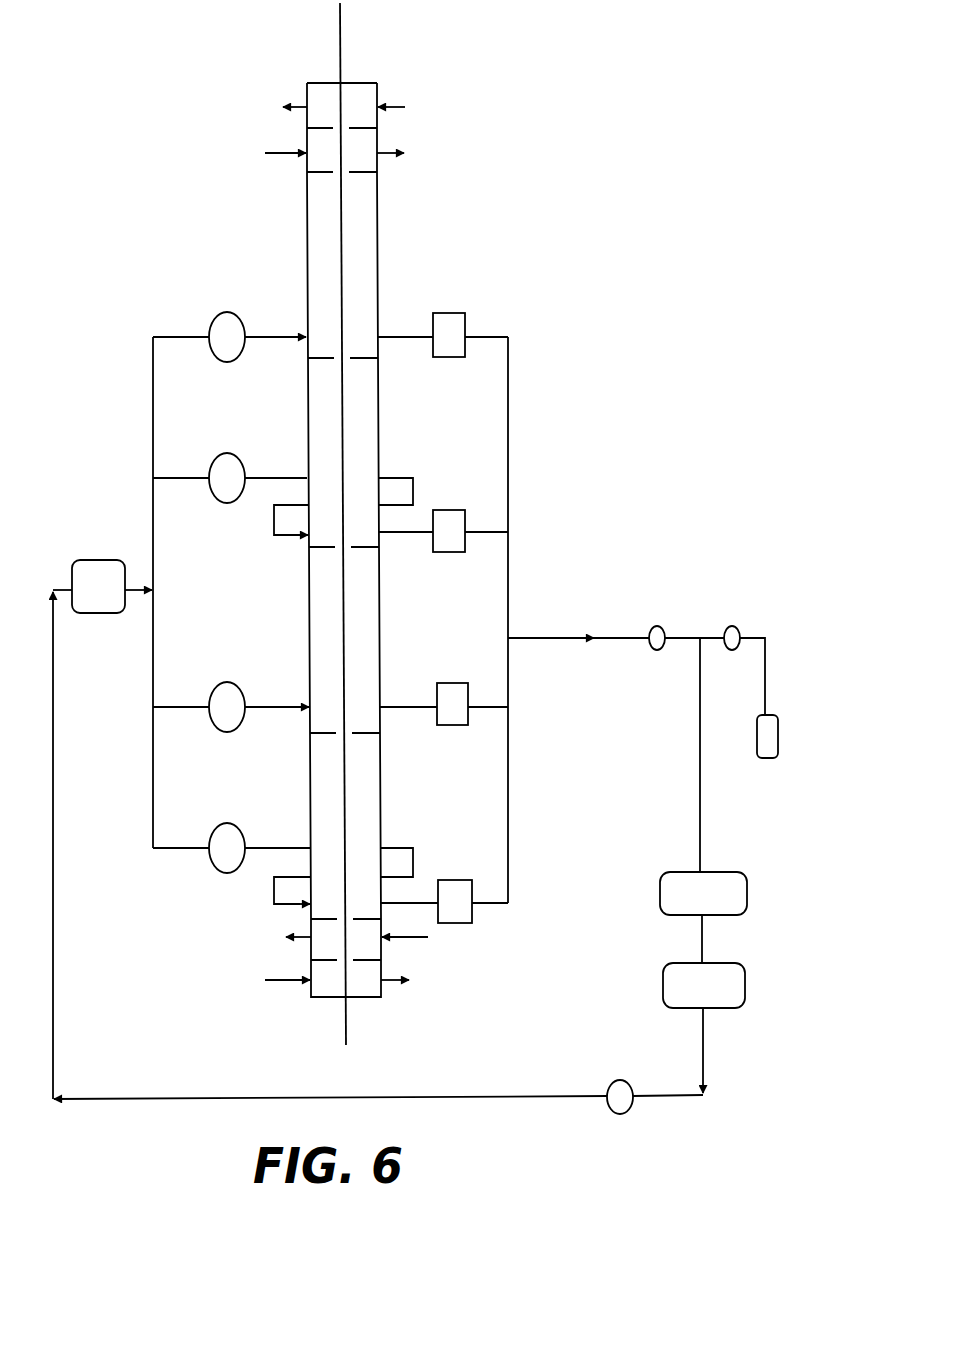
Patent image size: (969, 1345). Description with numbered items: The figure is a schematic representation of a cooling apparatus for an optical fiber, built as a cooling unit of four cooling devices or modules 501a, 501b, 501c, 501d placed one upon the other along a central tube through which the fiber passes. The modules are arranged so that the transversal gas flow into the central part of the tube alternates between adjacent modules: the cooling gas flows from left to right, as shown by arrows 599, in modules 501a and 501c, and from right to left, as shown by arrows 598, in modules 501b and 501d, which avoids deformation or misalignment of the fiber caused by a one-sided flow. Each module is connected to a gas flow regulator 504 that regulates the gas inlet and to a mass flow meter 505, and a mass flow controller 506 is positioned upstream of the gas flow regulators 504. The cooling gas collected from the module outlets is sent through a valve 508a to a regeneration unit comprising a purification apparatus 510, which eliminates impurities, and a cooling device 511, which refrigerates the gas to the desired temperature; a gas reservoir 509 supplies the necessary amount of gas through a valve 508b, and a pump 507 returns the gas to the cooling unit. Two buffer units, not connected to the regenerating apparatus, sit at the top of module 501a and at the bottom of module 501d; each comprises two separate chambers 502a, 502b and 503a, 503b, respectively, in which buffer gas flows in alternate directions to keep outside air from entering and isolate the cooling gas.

The cooling device 501a is at (377, 222).
The cooling device 501b is at (357, 425).
The cooling device 501c is at (357, 643).
The cooling device 501d is at (357, 808).
The buffer unit chamber 502a is at (360, 83).
The buffer unit chamber 502b is at (378, 147).
The buffer unit chamber 503a is at (380, 997).
The buffer unit chamber 503b is at (382, 948).
The gas flow regulator 504 is at (230, 832).
The mass flow meter 505 is at (448, 313).
The mass flow controller 506 is at (98, 560).
The pump 507 is at (620, 1114).
The valve 508a is at (657, 626).
The valve 508b is at (732, 626).
The gas reservoir 509 is at (767, 760).
The purification apparatus 510 is at (747, 888).
The cooling device 511 is at (745, 980).
The arrows 598 is at (410, 498).
The arrows 599 is at (283, 330).